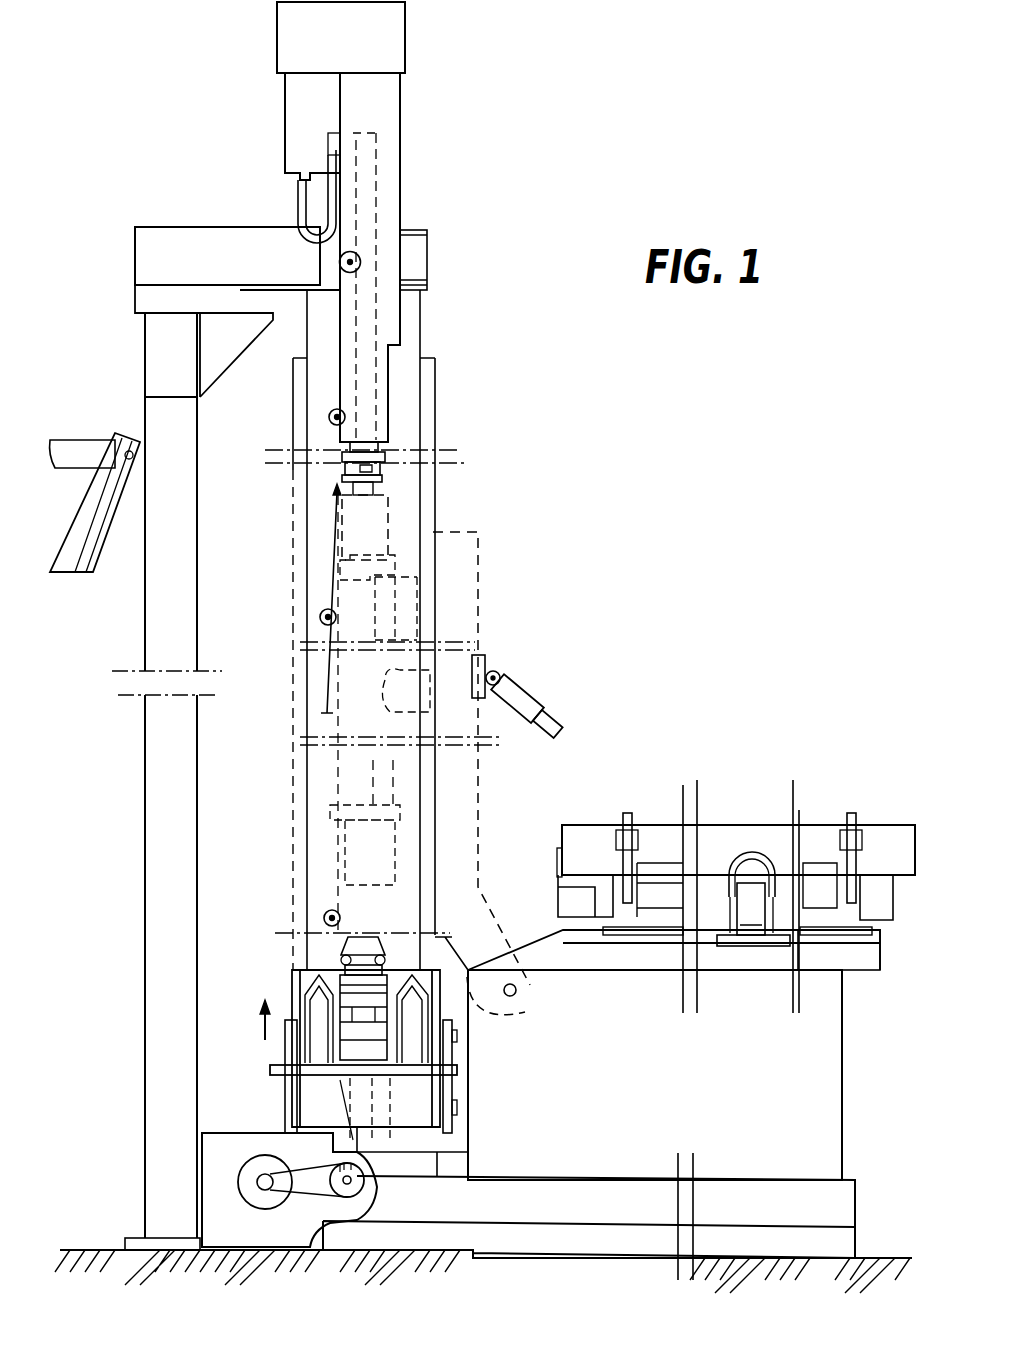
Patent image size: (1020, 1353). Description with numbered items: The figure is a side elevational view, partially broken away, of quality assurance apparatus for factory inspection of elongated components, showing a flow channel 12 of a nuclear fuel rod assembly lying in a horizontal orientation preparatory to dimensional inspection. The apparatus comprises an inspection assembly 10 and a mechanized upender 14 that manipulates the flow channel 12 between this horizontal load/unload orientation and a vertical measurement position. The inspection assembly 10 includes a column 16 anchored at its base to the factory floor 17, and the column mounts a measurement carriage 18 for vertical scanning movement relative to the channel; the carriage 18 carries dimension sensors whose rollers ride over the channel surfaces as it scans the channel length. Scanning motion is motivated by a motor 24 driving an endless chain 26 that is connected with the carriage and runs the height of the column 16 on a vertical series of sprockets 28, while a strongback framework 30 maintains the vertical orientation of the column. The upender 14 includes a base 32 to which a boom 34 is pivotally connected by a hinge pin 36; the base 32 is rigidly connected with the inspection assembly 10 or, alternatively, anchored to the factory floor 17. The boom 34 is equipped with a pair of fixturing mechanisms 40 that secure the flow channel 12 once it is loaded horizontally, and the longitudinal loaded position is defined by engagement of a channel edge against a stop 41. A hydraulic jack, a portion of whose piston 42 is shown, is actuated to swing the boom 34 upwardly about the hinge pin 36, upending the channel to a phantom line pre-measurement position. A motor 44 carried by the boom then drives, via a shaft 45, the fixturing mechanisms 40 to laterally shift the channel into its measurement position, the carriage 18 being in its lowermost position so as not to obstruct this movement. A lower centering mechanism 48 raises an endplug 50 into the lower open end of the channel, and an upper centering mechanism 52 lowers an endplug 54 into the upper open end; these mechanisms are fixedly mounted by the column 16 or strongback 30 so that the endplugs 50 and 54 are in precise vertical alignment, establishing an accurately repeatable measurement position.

The inspection assembly 10 is at (458, 197).
The flow channel 12 is at (390, 523).
The upender 14 is at (846, 1088).
The column 16 is at (410, 316).
The factory floor 17 is at (862, 1258).
The measurement carriage 18 is at (452, 1055).
The motor 24 is at (253, 1192).
The endless chain 26 is at (307, 578).
The sprockets 28 is at (328, 420).
The strongback framework 30 is at (193, 227).
The base 32 is at (700, 1100).
The boom 34 is at (485, 590).
The hinge pin 36 is at (516, 994).
The fixturing mechanisms 40 is at (629, 816).
The stop 41 is at (557, 878).
The piston 42 is at (553, 716).
The motor 44 is at (750, 878).
The shaft 45 is at (708, 946).
The lower centering mechanism 48 is at (337, 1018).
The endplug 50 is at (360, 945).
The upper centering mechanism 52 is at (400, 136).
The endplug 54 is at (385, 470).